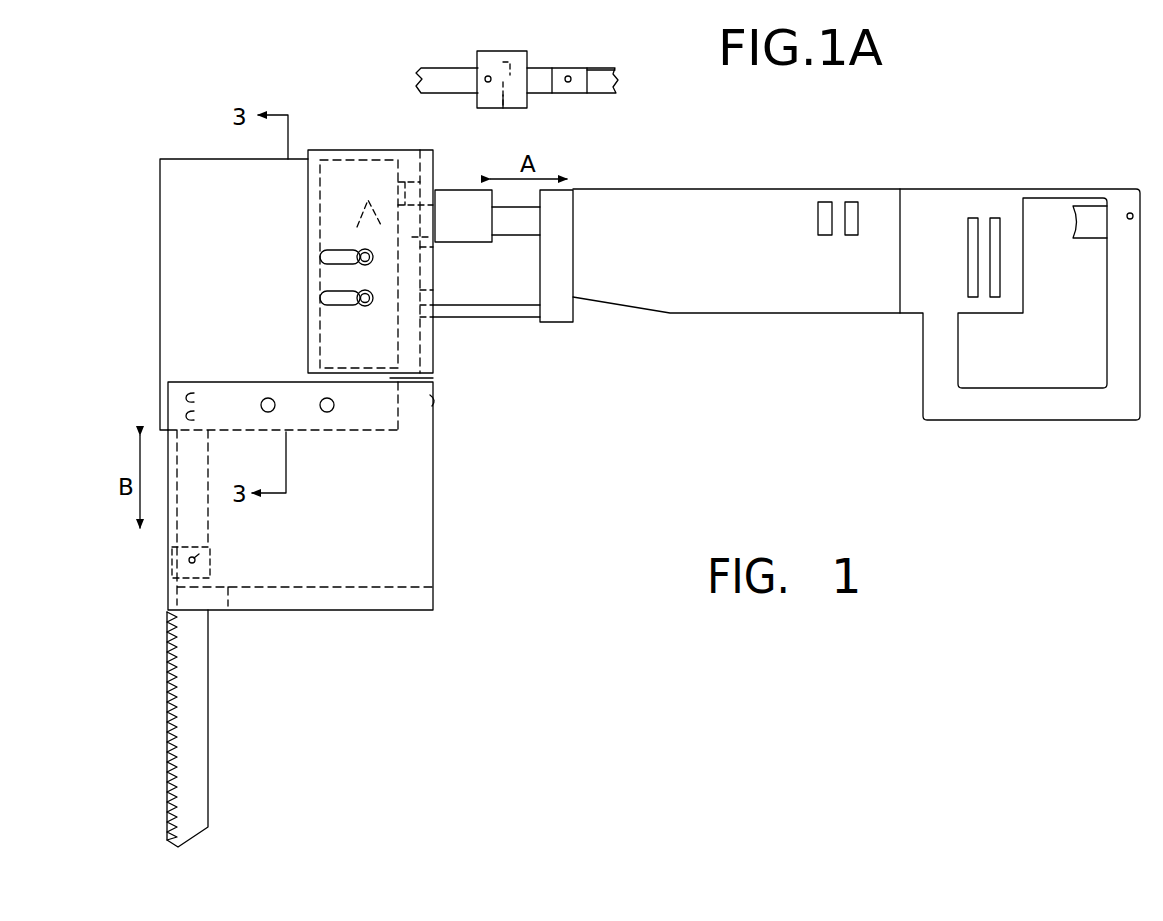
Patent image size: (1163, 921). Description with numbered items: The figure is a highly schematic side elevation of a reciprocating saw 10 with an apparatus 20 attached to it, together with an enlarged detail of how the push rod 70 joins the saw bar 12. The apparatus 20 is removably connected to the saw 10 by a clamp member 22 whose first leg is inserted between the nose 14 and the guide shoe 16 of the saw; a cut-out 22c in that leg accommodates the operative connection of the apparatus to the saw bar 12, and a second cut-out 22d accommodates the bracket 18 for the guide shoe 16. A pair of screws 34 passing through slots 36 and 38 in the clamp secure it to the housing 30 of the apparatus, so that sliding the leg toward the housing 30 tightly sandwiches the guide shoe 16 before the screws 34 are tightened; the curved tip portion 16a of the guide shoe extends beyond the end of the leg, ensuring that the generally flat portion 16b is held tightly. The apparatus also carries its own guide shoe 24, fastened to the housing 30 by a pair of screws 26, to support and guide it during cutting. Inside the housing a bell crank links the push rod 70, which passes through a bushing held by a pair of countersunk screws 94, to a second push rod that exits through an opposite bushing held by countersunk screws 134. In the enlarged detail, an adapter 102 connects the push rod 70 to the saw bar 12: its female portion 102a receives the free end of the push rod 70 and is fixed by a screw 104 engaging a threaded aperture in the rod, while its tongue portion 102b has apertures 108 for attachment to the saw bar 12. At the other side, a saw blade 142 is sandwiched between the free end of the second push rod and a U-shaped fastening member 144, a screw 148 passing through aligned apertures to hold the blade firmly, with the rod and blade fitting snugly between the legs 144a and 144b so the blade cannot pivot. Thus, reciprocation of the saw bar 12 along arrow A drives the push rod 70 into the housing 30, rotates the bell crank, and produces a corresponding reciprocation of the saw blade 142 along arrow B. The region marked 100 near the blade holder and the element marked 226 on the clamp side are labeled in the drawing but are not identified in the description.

In FIG. 1, the reciprocating saw 10 is at (905, 178).
In FIG. 1A, the saw bar 12 is at (617, 82).
In FIG. 1, the saw bar 12 is at (522, 218).
In FIG. 1, the nose 14 is at (572, 304).
In FIG. 1, the guide shoe 16 is at (414, 340).
In FIG. 1, the curved tip portion 16a is at (433, 399).
In FIG. 1, the generally flat portion 16b is at (420, 315).
In FIG. 1, the bracket 18 is at (507, 312).
In FIG. 1, the apparatus 20 is at (145, 260).
In FIG. 1, the clamp member 22 is at (334, 160).
In FIG. 1, the cut-out 22c is at (435, 252).
In FIG. 1, the second cut-out 22d is at (432, 292).
In FIG. 1, the guide shoe 24 is at (387, 518).
In FIG. 1, the screws 26 is at (322, 398).
In FIG. 1, the housing 30 is at (164, 195).
In FIG. 1, the screws 34 is at (362, 265).
In FIG. 1, the slot 36 is at (354, 252).
In FIG. 1, the slot 38 is at (339, 303).
In FIG. 1A, the push rod 70 is at (418, 74).
In FIG. 1, the screws 94 is at (367, 199).
In FIG. 1, the blade holder 100 is at (193, 472).
In FIG. 1A, the adapter 102 is at (524, 55).
In FIG. 1A, the female portion 102a is at (504, 104).
In FIG. 1A, the tongue portion 102b is at (540, 88).
In FIG. 1A, the screw 104 is at (488, 76).
In FIG. 1A, the apertures 108 is at (570, 78).
In FIG. 1, the countersunk screws 134 is at (172, 414).
In FIG. 1, the saw blade 142 is at (192, 722).
In FIG. 1, the U-shaped fastening member 144 is at (168, 567).
In FIG. 1, the leg 144a is at (172, 552).
In FIG. 1, the leg 144b is at (212, 572).
In FIG. 1, the screw 148 is at (212, 546).
In FIG. 1, the housing wall 226 is at (318, 327).